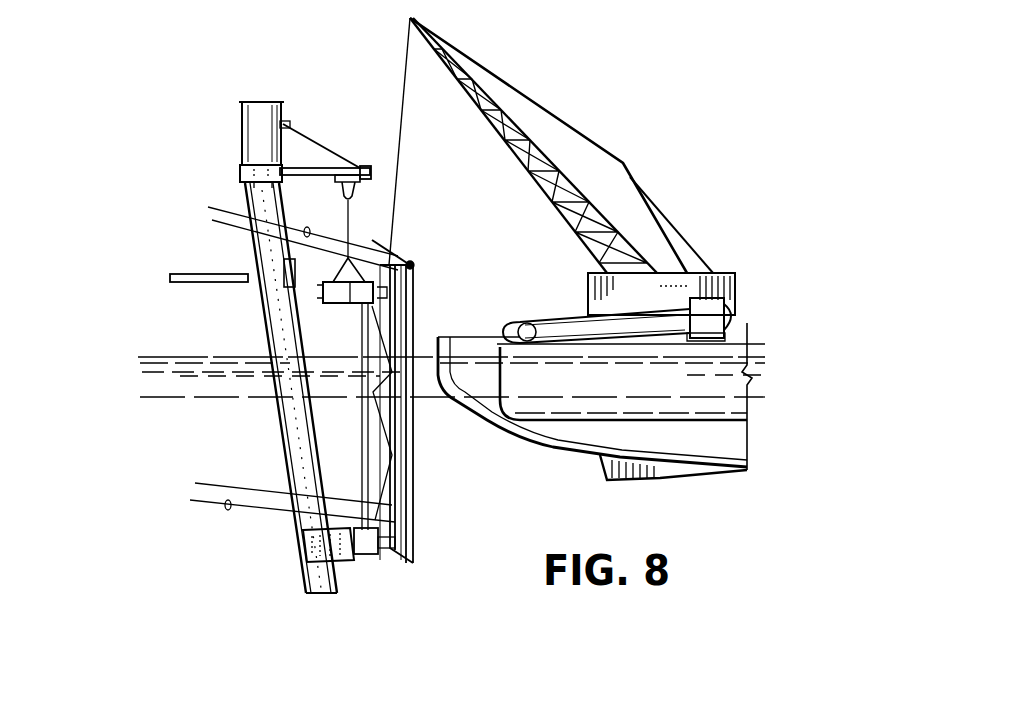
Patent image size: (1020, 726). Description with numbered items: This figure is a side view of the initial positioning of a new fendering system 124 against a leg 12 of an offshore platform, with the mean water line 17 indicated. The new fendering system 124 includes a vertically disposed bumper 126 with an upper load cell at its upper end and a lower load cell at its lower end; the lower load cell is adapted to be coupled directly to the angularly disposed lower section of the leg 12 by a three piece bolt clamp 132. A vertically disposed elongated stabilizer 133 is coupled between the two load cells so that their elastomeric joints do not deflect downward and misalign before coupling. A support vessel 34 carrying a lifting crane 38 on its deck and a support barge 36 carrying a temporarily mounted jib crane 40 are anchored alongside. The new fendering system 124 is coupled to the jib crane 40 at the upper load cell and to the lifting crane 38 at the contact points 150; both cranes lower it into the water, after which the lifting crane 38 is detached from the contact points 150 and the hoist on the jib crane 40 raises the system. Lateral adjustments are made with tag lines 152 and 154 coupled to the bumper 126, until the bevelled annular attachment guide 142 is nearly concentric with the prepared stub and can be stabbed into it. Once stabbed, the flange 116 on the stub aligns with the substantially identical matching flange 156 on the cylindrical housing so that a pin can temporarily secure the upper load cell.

The leg 12 is at (283, 445).
The mean water line 17 is at (180, 355).
The support vessel 34 is at (687, 437).
The support barge 36 is at (546, 408).
The lifting crane 38 is at (565, 198).
The jib crane 40 is at (333, 173).
The flange 116 is at (268, 255).
The new fendering system 124 is at (413, 478).
The bumper 126 is at (413, 322).
The three piece bolt clamp 132 is at (340, 567).
The elongated stabilizer 133 is at (363, 408).
The bevelled annular attachment guide 142 is at (353, 247).
The contact points 150 is at (362, 378).
The tag line 152 is at (305, 230).
The tag line 154 is at (224, 507).
The matching flange 156 is at (350, 249).